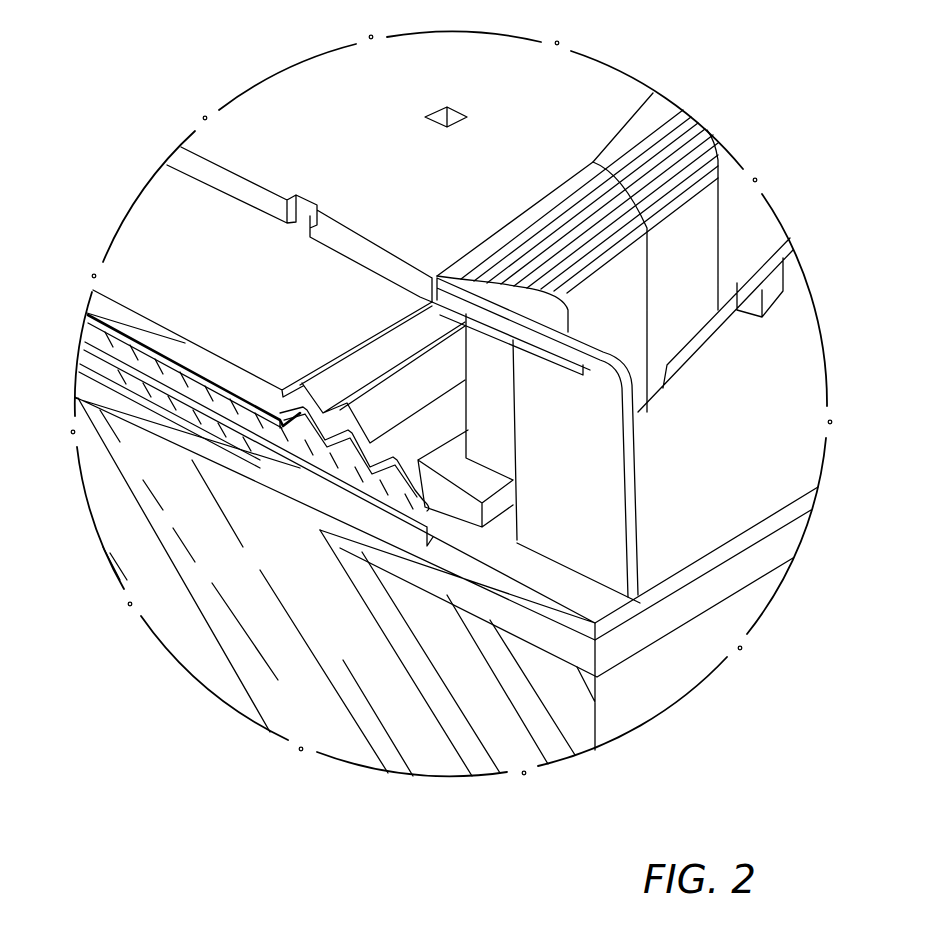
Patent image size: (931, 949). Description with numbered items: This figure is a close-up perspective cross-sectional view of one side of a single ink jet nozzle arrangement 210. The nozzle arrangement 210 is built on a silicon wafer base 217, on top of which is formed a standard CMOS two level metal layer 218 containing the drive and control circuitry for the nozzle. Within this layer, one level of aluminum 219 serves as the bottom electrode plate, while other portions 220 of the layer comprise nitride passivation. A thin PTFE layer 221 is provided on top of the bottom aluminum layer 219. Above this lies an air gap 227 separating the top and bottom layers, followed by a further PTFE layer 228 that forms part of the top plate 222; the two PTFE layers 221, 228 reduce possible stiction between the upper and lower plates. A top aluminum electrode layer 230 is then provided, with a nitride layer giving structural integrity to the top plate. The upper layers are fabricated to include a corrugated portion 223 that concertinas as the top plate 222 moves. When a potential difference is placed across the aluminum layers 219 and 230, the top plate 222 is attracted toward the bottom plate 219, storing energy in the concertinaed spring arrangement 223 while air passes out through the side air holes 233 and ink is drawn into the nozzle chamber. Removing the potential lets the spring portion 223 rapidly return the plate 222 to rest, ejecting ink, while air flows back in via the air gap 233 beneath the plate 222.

The nozzle arrangement 210 is at (214, 82).
The silicon wafer base 217 is at (597, 717).
The CMOS two level metal layer 218 is at (615, 647).
The aluminum layer (bottom electrode plate) 219 is at (403, 530).
The nitride passivation portions 220 is at (736, 547).
The PTFE layer 221 is at (350, 455).
The top plate 222 is at (163, 287).
The corrugated portion (concertinaed spring arrangement) 223 is at (372, 407).
The air gap 227 is at (260, 427).
The PTFE layer 228 is at (223, 393).
The top aluminum electrode layer 230 is at (172, 347).
The side air holes (air gap) 233 is at (683, 381).